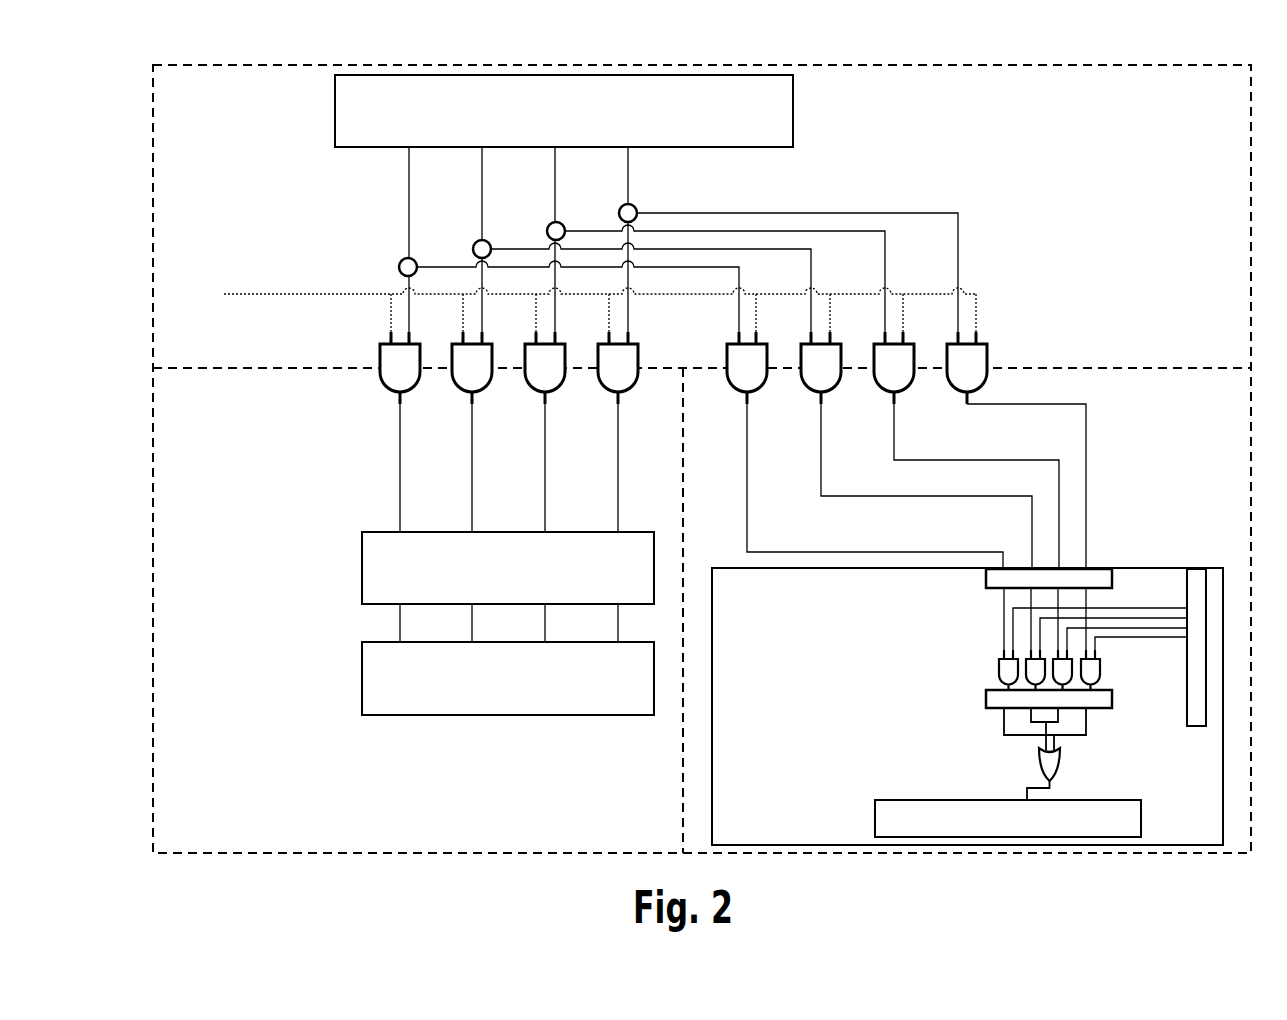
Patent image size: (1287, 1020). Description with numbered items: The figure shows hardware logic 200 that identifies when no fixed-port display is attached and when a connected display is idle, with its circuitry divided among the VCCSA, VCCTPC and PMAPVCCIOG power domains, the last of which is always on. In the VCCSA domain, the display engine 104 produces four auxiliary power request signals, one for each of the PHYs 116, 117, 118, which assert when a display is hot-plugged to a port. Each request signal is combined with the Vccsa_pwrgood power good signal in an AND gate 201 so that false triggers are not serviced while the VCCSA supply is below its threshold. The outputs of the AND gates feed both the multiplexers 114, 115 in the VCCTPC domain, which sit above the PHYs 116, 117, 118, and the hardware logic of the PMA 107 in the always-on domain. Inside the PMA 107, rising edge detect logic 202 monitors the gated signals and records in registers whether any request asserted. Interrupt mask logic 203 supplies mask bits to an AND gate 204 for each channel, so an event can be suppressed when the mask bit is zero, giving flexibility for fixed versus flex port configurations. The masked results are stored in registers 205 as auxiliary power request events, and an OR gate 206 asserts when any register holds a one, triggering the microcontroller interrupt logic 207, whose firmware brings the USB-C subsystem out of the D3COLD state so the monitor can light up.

The hardware logic 200 is at (706, 38).
The display engine 104 is at (636, 121).
The multiplexer 114 is at (508, 568).
The multiplexer 115 is at (557, 579).
The PHY 116 is at (508, 678).
The PHY 117 is at (508, 678).
The PHY 118 is at (580, 687).
The PMA 107 is at (790, 715).
The AND gate 201 is at (968, 368).
The rising edge detect logic 202 is at (986, 580).
The interrupt mask logic 203 is at (1182, 726).
The AND gate 204 is at (1102, 672).
The registers 205 is at (986, 699).
The OR gate 206 is at (1040, 762).
The microcontroller interrupt logic 207 is at (896, 800).